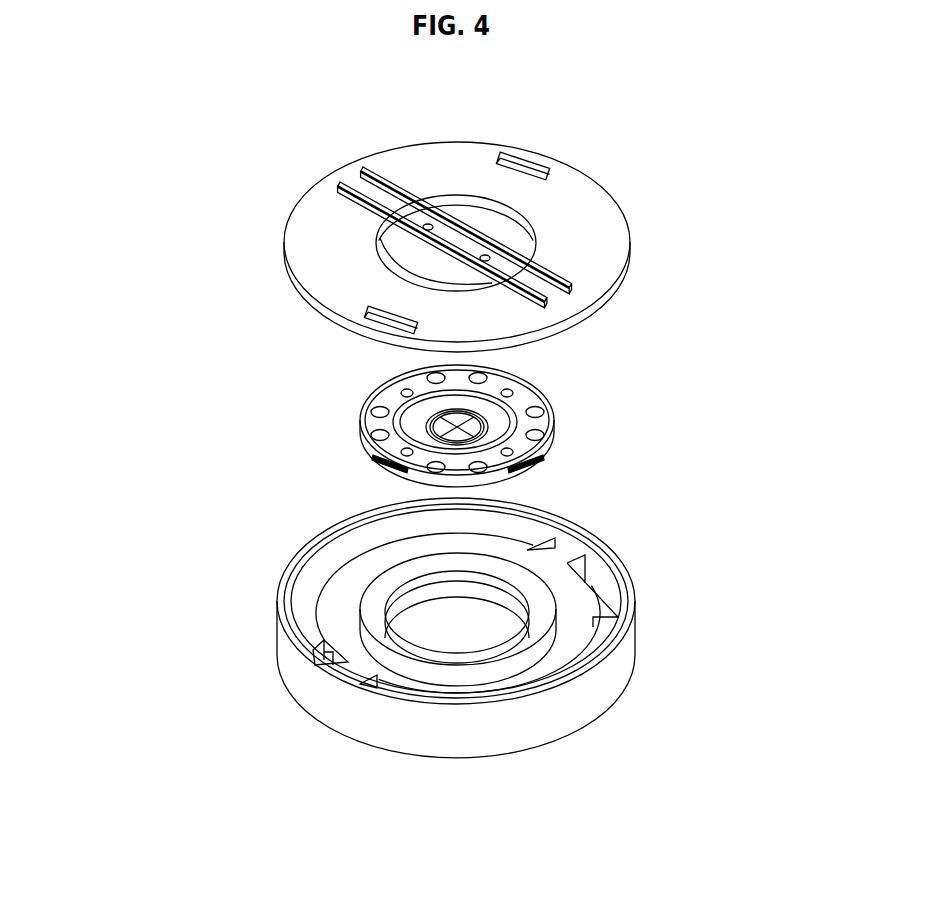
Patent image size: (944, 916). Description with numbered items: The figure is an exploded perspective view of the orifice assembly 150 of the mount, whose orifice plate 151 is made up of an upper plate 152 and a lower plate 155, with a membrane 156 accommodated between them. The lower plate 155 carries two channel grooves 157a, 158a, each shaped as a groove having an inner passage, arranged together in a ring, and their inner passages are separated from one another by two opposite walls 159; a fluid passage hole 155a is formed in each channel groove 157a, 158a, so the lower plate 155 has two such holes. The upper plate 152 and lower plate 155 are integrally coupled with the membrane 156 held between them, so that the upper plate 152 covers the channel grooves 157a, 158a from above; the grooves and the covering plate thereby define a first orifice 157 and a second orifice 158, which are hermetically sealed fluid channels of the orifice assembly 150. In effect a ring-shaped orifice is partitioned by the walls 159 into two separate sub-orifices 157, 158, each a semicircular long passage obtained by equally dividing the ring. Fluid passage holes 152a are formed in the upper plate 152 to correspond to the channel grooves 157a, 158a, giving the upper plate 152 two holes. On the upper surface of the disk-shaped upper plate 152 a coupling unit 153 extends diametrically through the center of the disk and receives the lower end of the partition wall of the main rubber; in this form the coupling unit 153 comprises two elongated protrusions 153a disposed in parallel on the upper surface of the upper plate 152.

The orifice assembly 150 is at (600, 517).
The orifice plate 151 is at (138, 397).
The upper plate 152 is at (293, 288).
The fluid passage holes 152a is at (533, 168).
The coupling unit 153 is at (396, 202).
The elongated protrusions 153a is at (346, 180).
The lower plate 155 is at (285, 643).
The fluid passage hole 155a is at (603, 610).
The membrane 156 is at (553, 422).
The first orifice 157 is at (286, 704).
The channel groove 157a is at (308, 634).
The second orifice 158 is at (692, 633).
The channel groove 158a is at (600, 640).
The walls 159 is at (585, 568).